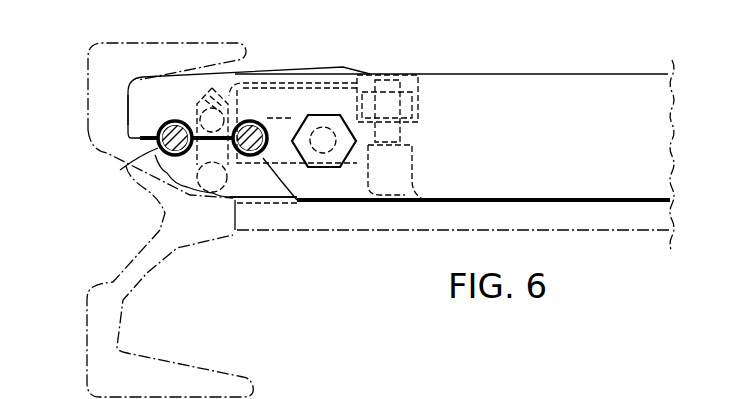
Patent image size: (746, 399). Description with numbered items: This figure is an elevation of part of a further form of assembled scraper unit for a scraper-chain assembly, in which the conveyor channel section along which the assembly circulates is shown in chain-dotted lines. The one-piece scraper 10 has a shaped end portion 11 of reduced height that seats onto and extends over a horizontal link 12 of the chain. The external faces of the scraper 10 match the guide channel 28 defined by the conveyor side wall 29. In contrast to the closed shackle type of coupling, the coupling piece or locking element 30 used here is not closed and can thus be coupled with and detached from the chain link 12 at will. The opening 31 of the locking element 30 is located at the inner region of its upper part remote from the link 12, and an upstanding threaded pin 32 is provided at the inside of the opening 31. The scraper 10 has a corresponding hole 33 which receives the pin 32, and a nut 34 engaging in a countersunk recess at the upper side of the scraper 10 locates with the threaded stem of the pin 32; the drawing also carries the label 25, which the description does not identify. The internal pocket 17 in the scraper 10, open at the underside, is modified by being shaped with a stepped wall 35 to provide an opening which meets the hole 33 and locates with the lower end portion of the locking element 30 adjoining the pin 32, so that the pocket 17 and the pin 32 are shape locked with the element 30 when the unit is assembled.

The scraper 10 is at (510, 88).
The end portion 11 is at (150, 93).
The horizontal link 12 is at (128, 168).
The pocket 17 is at (268, 165).
The nut 25 is at (318, 130).
The guide channel 28 is at (125, 118).
The conveyor side wall 29 is at (107, 100).
The locking element 30 is at (258, 187).
The opening 31 is at (352, 125).
The threaded pin 32 is at (390, 83).
The hole 33 is at (402, 130).
The nut 34 is at (367, 100).
The stepped wall 35 is at (356, 130).